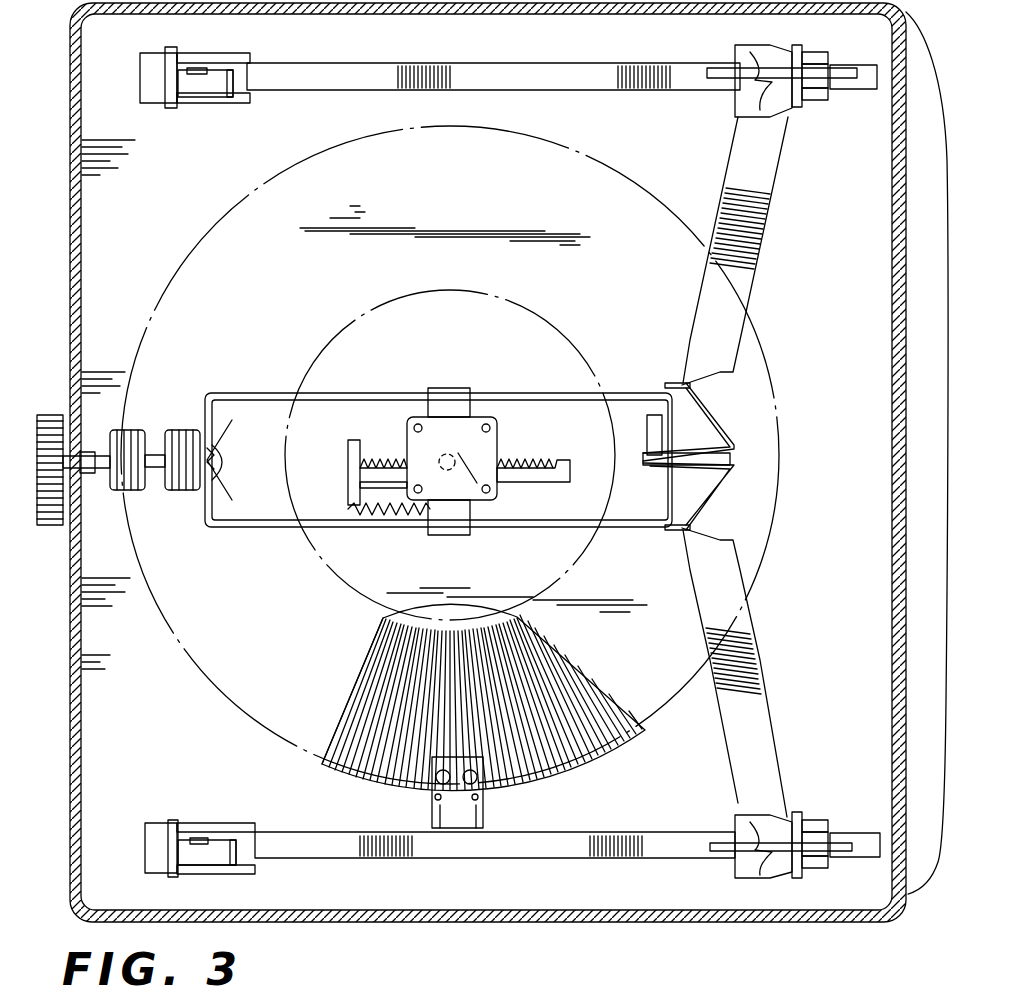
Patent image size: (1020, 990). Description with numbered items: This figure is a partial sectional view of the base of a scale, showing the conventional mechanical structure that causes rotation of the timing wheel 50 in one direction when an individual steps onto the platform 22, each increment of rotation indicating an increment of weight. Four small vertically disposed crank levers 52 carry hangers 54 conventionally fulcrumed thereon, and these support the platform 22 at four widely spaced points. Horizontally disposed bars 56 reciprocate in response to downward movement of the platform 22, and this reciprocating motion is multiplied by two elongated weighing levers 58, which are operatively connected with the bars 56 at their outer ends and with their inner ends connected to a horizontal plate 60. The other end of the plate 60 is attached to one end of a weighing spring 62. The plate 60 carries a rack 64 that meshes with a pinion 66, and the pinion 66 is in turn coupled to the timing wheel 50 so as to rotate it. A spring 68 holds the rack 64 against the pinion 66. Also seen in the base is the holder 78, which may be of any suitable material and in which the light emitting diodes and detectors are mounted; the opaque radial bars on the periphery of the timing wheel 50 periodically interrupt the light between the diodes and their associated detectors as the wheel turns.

The platform 22 is at (117, 802).
The timing wheel 50 is at (275, 738).
The crank levers 52 is at (205, 72).
The hangers 54 is at (225, 105).
The bars 56 is at (530, 63).
The weighing levers 58 is at (765, 165).
The horizontal plate 60 is at (345, 398).
The weighing spring 62 is at (185, 432).
The rack 64 is at (530, 463).
The pinion 66 is at (492, 492).
The spring 68 is at (385, 514).
The holder 78 is at (458, 800).